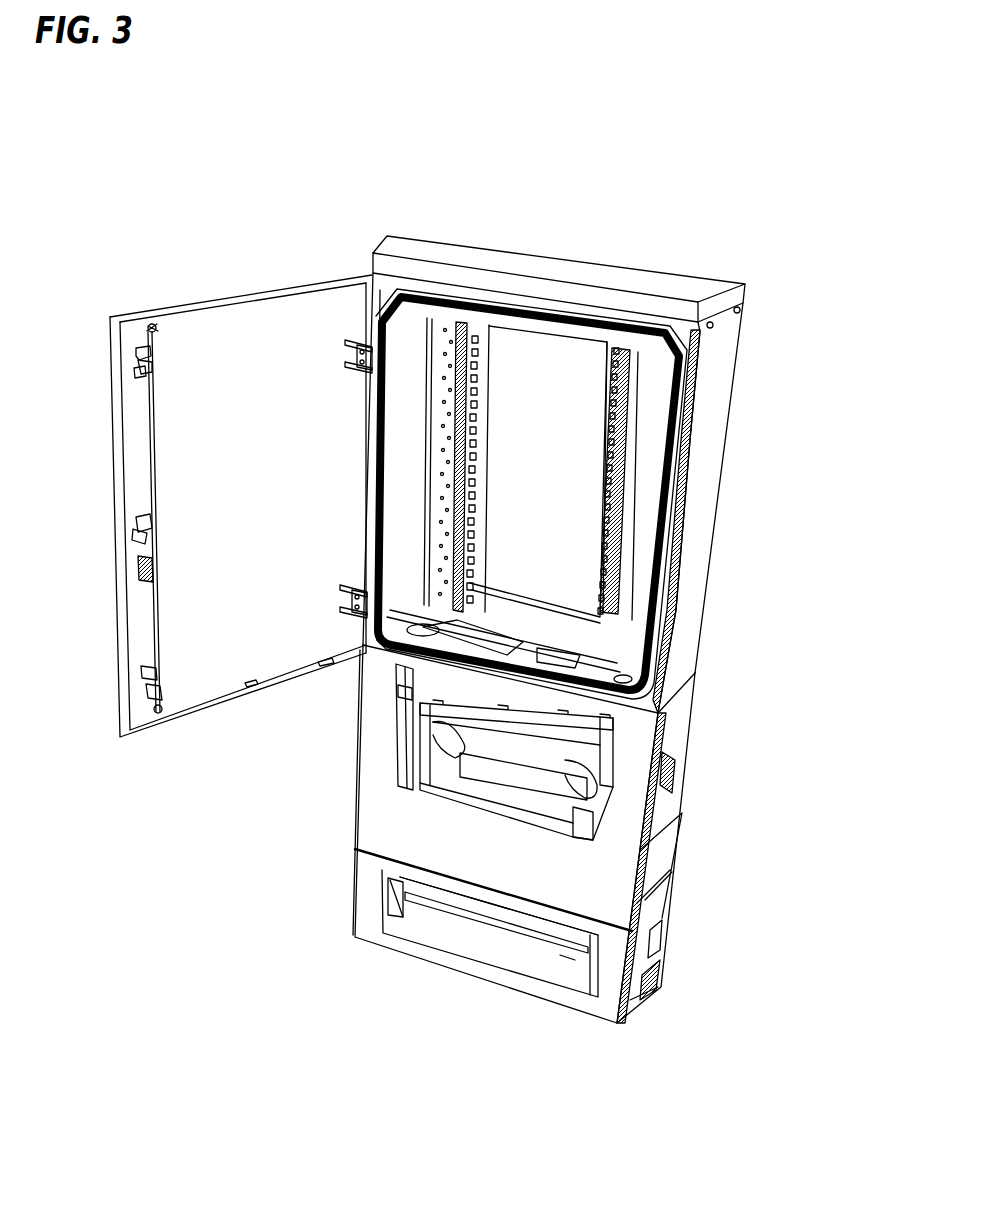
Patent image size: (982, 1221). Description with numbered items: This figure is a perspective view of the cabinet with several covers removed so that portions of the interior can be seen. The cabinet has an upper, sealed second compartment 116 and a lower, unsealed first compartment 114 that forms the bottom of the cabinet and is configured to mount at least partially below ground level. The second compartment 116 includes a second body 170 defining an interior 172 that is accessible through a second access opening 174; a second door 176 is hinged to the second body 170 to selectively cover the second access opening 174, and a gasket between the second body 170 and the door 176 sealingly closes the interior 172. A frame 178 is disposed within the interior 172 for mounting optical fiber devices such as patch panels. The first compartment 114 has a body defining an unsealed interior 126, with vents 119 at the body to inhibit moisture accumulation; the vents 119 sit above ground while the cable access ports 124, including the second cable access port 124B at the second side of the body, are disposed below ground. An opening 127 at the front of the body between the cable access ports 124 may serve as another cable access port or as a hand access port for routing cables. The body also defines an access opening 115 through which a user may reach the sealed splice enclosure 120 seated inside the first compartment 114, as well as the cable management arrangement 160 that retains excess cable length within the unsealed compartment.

The first compartment 114 is at (674, 843).
The access opening 115 is at (418, 740).
The second compartment 116 is at (727, 432).
The vents 119 is at (670, 777).
The splice enclosure 120 is at (472, 777).
The cable access port 124 is at (660, 928).
The second cable access port 124B is at (735, 968).
The unsealed interior 126 is at (420, 687).
The opening 127 is at (428, 938).
The cable management arrangement 160 is at (590, 770).
The second body 170 is at (716, 368).
The interior 172 is at (566, 519).
The second access opening 174 is at (655, 552).
The second door 176 is at (112, 472).
The frame 178 is at (478, 346).